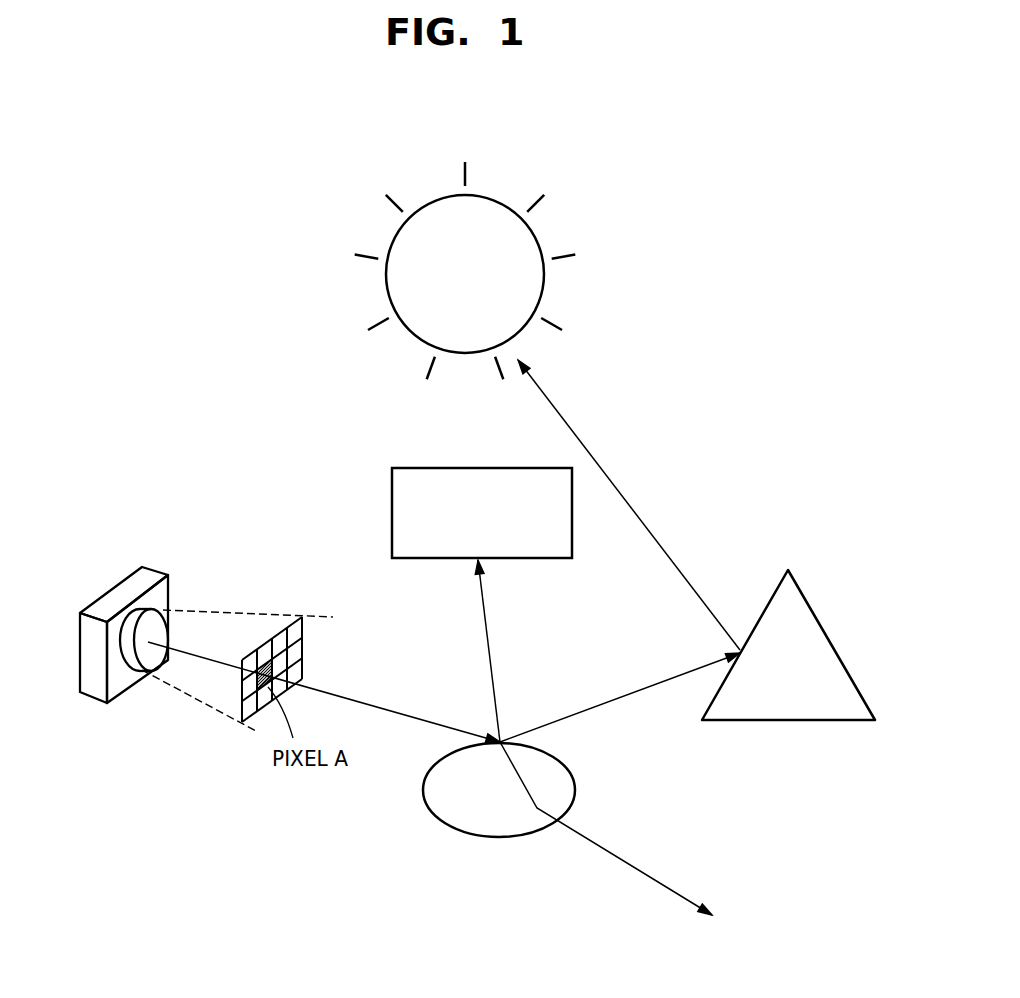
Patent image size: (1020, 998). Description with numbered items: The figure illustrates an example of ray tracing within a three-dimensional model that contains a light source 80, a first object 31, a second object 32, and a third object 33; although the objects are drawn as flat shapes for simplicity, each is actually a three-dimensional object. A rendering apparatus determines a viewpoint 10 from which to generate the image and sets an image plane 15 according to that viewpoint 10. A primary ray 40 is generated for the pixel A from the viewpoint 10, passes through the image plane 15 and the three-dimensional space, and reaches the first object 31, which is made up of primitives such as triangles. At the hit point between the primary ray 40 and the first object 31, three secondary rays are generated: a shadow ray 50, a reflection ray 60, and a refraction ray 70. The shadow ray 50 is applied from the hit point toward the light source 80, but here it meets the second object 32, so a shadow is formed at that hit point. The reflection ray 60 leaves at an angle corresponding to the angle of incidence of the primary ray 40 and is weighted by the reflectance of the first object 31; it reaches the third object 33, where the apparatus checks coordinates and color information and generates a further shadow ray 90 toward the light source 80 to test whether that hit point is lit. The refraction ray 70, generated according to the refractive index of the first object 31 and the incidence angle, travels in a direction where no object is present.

The viewpoint 10 is at (150, 577).
The image plane 15 is at (268, 638).
The first object 31 is at (499, 790).
The second object 32 is at (482, 513).
The third object 33 is at (788, 645).
The primary ray 40 is at (365, 702).
The shadow ray 50 is at (492, 658).
The reflection ray 60 is at (600, 703).
The refraction ray 70 is at (622, 863).
The light source 80 is at (465, 270).
The shadow ray 90 is at (630, 507).